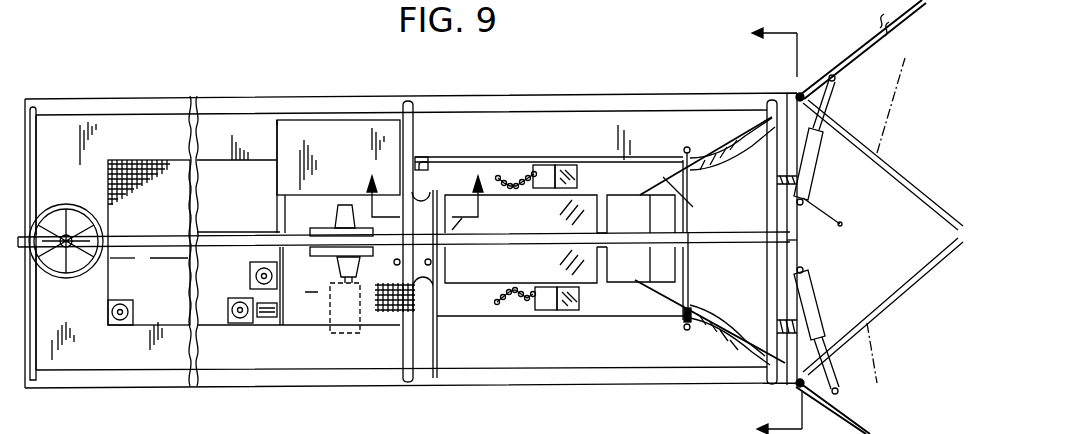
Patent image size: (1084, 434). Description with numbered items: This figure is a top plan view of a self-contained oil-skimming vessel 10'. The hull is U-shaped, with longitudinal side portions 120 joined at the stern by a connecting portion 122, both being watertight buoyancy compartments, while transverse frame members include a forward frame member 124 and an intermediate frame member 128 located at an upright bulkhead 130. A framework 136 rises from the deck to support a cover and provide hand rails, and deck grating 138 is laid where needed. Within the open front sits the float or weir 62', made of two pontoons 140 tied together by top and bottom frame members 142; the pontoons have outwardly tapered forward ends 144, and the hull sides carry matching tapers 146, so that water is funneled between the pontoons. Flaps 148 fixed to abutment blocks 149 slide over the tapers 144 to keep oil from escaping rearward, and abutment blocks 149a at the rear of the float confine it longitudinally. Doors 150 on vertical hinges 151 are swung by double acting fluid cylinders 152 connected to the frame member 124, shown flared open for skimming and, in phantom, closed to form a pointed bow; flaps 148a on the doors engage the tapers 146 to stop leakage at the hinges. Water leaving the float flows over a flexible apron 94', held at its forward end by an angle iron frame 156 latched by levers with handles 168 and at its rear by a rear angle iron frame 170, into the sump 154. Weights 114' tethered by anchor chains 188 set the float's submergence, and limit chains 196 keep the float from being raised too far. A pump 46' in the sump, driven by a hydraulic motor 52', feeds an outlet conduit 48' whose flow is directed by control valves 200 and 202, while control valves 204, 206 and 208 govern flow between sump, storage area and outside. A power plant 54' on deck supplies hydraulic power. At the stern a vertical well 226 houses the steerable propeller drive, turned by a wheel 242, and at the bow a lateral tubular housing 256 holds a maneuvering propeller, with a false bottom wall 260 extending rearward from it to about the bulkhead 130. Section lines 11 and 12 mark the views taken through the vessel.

The vessel 10' is at (549, 117).
The section line 11- 11 is at (791, 231).
The section line 12- 12 is at (425, 196).
The pump 46' is at (337, 164).
The outlet conduit 48' is at (238, 217).
The hydraulic motor 52' is at (341, 334).
The power plant 54' is at (338, 133).
The float 62' is at (619, 119).
The flexible apron 94' is at (453, 335).
The weights 114' is at (556, 243).
The longitudinal side portions 120 is at (222, 99).
The connecting portion 122 is at (60, 128).
The forward frame member 124 is at (808, 248).
The intermediate frame member 128 is at (280, 330).
The upright bulkhead 130 is at (240, 433).
The framework 136 is at (765, 123).
The deck grating 138 is at (143, 165).
The pontoons 140 is at (635, 170).
The frame members 142 is at (440, 200).
The forward ends 144 is at (690, 246).
The tapers 146 is at (703, 163).
The flaps 148 is at (702, 178).
The flaps 148a is at (822, 337).
The abutment blocks 149 is at (733, 134).
The abutment blocks 149a is at (422, 157).
The doors 150 is at (866, 38).
The hinges 151 is at (798, 93).
The double acting fluid cylinders 152 is at (840, 226).
The sump 154 is at (304, 286).
The angle iron frame 156 is at (438, 250).
The handles 168 is at (478, 426).
The rear angle iron frame 170 is at (398, 292).
The anchor chains 188 is at (520, 178).
The limit chains 196 is at (687, 147).
The control valve 200 is at (160, 258).
The control valve 202 is at (122, 258).
The control valve 204 is at (250, 277).
The control valve 206 is at (235, 323).
The control valve 208 is at (128, 326).
The vertical well 226 is at (56, 216).
The wheel 242 is at (72, 287).
The lateral tubular housing 256 is at (693, 207).
The false bottom wall 260 is at (582, 213).